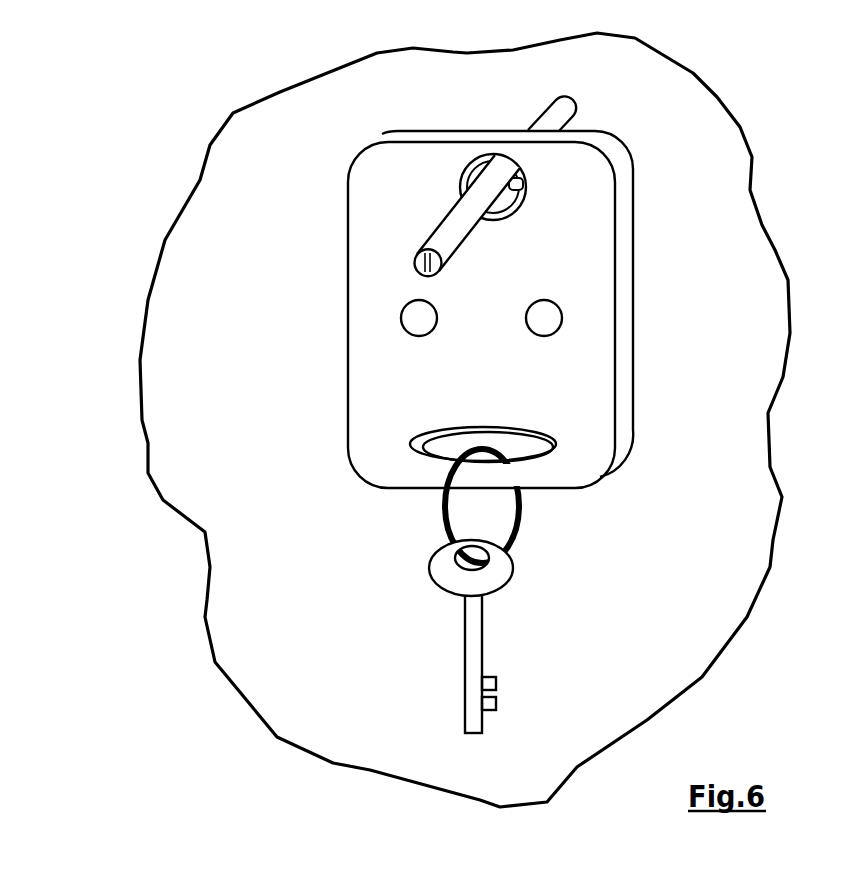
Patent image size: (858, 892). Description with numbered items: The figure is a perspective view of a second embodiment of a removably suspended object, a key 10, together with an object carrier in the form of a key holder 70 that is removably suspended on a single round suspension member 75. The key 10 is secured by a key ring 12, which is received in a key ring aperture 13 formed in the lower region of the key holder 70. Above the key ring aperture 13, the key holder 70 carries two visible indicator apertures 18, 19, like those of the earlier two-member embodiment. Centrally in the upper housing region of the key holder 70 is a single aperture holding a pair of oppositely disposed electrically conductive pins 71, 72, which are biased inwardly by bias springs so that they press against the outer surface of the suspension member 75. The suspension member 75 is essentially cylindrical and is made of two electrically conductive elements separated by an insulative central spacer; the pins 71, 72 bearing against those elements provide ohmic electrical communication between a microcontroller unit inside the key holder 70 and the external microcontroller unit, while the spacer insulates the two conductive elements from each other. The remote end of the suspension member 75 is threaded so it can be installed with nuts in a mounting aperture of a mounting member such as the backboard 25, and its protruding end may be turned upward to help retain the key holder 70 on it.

The backboard 25 is at (431, 106).
The key holder 70 is at (644, 242).
The electrically conductive pin 71 is at (470, 183).
The electrically conductive pin 72 is at (523, 182).
The suspension member 75 is at (432, 222).
The visible indicator aperture 18 is at (401, 313).
The visible indicator aperture 19 is at (562, 314).
The key ring aperture 13 is at (557, 436).
The key ring 12 is at (517, 531).
The key 10 is at (473, 637).